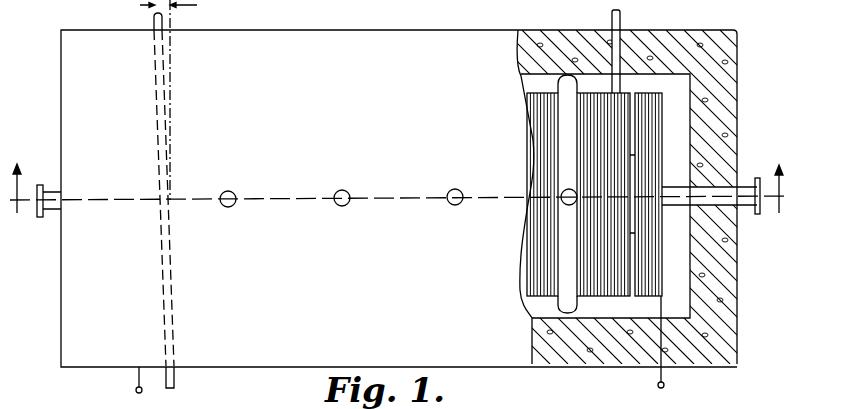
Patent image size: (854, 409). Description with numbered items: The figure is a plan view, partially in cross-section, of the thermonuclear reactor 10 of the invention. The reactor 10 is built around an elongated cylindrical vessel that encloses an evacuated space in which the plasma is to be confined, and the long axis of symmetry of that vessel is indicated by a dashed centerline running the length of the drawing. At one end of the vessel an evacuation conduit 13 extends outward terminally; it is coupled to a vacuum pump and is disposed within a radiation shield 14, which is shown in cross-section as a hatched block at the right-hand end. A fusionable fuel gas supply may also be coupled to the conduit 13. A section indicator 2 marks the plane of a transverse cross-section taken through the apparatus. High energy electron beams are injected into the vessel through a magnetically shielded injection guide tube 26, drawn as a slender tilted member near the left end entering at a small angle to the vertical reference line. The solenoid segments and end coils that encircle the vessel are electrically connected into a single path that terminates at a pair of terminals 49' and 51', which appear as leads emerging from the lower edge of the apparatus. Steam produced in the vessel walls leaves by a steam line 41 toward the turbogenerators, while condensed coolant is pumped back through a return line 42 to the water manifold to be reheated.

The thermonuclear reactor 10 is at (367, 27).
The section line indicator 2 is at (398, 185).
The evacuation conduit 13 is at (748, 207).
The radiation shield 14 is at (609, 366).
The injection guide tube 26 is at (174, 387).
The steam line 41 is at (342, 207).
The return line 42 is at (621, 25).
The terminal 49' is at (683, 344).
The terminal 51' is at (117, 387).